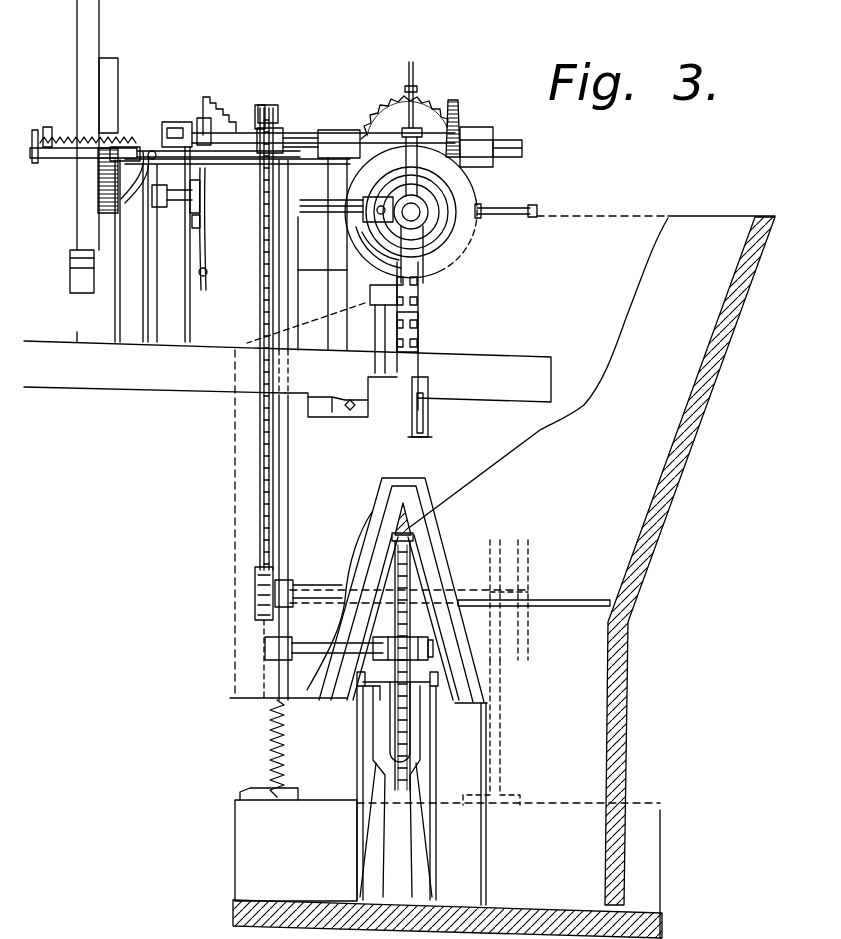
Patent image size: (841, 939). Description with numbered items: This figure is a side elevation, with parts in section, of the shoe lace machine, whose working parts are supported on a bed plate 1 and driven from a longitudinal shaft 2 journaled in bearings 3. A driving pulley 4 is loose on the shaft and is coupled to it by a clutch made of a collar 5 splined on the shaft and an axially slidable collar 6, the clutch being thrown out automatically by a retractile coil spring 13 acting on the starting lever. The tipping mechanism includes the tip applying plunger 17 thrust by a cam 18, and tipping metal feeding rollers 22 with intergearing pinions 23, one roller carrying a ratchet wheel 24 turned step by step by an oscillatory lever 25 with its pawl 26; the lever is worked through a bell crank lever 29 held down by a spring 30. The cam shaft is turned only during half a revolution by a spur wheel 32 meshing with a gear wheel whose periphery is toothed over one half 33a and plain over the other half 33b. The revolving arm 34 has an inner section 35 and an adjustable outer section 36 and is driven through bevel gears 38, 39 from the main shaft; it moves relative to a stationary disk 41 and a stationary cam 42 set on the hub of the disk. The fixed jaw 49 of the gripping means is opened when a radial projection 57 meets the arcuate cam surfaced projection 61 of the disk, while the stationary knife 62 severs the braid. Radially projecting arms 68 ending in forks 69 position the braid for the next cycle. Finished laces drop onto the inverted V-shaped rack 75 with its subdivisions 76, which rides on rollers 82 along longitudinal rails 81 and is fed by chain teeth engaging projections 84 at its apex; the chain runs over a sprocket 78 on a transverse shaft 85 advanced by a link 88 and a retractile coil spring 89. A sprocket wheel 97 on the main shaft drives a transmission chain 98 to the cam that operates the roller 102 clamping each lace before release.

The bed plate 1 is at (548, 378).
The longitudinal shaft 2 is at (334, 137).
The bearings 3 is at (345, 136).
The driving pulley 4 is at (99, 37).
The collar 5 is at (50, 126).
The collar 6 is at (36, 128).
The retractile coil spring 13 is at (65, 150).
The tip applying plunger 17 is at (188, 112).
The cam 18 is at (183, 122).
The feeding rollers 22 is at (175, 212).
The intergearing pinions 23 is at (155, 205).
The ratchet wheel 24 is at (203, 196).
The oscillatory lever 25 is at (206, 240).
The pawl 26 is at (203, 222).
The bell crank lever 29 is at (228, 117).
The spring 30 is at (256, 105).
The spur wheel 32 is at (97, 196).
The toothed half of gear wheel 33a is at (118, 125).
The plain half of gear wheel 33b is at (118, 70).
The revolving arm 34 is at (418, 300).
The inner section 35 is at (418, 265).
The outer section 36 is at (418, 333).
The bevel gear 38 is at (462, 117).
The bevel gear 39 is at (443, 110).
The stationary disk 41 is at (462, 190).
The stationary cam 42 is at (447, 233).
The fixed jaw 49 is at (320, 402).
The radial projection 57 is at (378, 268).
The arcuate cam surfaced projection 61 is at (368, 692).
The stationary knife 62 is at (362, 690).
The radially projecting arms 68 is at (422, 125).
The forks 69 is at (413, 70).
The rack 75 is at (430, 554).
The subdivisions 76 is at (426, 479).
The sprocket 78 is at (410, 586).
The longitudinal rails 81 is at (417, 706).
The rollers 82 is at (438, 682).
The projections 84 is at (410, 528).
The transverse shaft 85 is at (313, 657).
The link 88 is at (298, 522).
The retractile coil spring 89 is at (270, 728).
The sprocket wheel 97 is at (282, 131).
The transmission chain 98 is at (310, 103).
The roller 102 is at (552, 600).